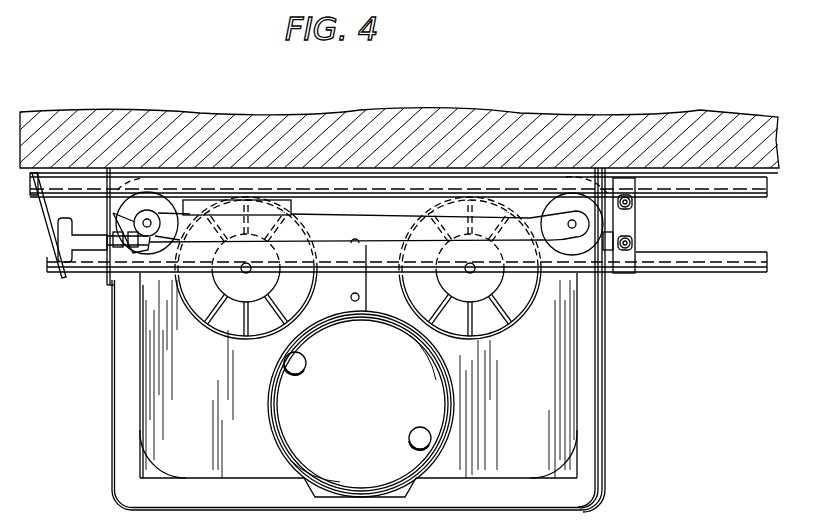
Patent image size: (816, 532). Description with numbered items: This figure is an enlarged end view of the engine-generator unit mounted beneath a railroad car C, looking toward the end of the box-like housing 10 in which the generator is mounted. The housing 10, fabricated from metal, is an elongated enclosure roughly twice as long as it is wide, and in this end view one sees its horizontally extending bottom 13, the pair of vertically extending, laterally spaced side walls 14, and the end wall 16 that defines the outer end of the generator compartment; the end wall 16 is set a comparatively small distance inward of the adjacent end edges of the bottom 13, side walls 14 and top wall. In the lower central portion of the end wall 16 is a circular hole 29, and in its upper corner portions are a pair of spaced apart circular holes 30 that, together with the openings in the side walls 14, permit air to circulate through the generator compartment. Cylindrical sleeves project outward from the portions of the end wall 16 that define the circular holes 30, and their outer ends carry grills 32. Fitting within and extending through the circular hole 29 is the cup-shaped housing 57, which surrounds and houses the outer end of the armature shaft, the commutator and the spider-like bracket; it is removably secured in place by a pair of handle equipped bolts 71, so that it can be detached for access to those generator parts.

The railroad car C is at (147, 112).
The housing 10 is at (606, 386).
The bottom 13 is at (530, 512).
The side walls 14 is at (112, 383).
The end wall 16 is at (212, 432).
The circular hole 29 is at (452, 397).
The circular holes 30 is at (213, 300).
The grills 32 is at (233, 323).
The cup-shaped housing 57 is at (361, 404).
The handle equipped bolts 71 is at (296, 375).